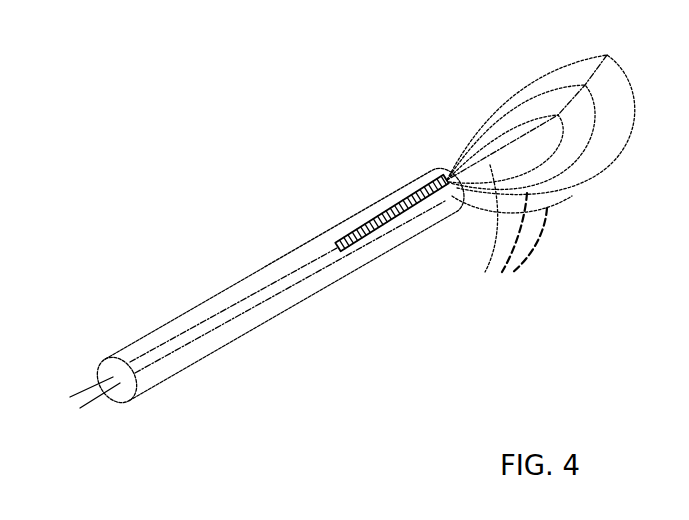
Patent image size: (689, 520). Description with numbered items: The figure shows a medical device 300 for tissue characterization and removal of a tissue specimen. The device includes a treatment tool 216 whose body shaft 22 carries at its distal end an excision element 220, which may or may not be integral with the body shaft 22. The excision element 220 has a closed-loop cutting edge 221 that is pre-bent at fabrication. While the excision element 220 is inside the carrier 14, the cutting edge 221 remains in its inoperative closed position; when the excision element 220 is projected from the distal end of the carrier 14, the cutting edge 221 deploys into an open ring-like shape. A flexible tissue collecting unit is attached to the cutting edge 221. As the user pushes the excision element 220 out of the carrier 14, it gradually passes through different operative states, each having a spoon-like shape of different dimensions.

The carrier 14 is at (140, 332).
The body shaft 22 is at (212, 329).
The treatment tool 216 is at (291, 290).
The excision element 220 is at (396, 231).
The closed-loop cutting edge 221 is at (385, 215).
The medical device 300 is at (229, 236).